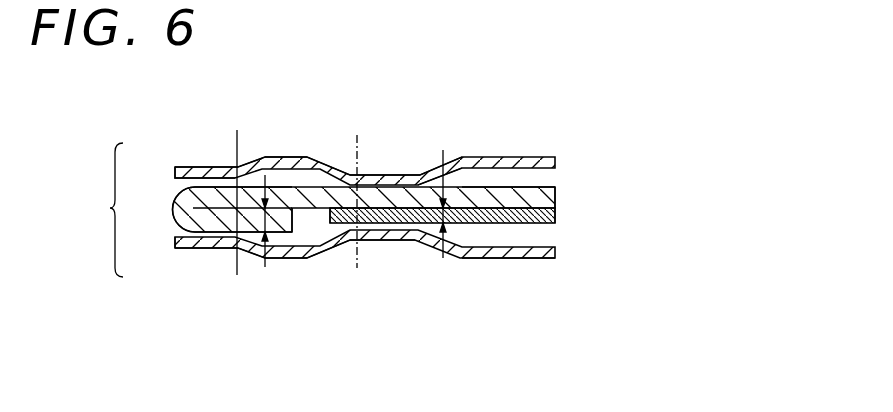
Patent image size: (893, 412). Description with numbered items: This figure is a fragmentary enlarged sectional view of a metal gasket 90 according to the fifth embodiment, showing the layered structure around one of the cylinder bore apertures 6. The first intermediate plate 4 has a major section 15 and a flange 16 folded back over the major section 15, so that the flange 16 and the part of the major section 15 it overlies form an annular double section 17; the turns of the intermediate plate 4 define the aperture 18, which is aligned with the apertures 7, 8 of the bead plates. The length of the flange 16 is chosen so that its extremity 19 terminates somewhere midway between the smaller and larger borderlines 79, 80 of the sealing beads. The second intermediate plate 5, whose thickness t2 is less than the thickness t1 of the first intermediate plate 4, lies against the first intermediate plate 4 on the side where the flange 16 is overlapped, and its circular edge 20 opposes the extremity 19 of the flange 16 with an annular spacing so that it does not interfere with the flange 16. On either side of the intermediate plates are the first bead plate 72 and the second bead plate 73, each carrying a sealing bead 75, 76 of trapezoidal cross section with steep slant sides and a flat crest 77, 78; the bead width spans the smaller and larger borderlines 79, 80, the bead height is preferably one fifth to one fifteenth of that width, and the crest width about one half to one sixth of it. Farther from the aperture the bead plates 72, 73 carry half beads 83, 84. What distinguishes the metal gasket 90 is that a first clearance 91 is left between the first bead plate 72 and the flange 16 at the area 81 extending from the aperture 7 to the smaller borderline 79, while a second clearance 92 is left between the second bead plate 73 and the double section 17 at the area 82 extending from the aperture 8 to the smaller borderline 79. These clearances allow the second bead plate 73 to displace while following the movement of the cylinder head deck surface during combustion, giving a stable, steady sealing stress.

The first intermediate plate 4 is at (543, 202).
The second intermediate plate 5 is at (556, 217).
The cylinder bore apertures 6 is at (109, 210).
The aperture 7 is at (176, 245).
The aperture 8 is at (175, 170).
The major section 15 is at (512, 197).
The flange 16 is at (226, 250).
The double section 17 is at (222, 168).
The third aperture 18 is at (171, 208).
The extremity of flange 19 is at (294, 236).
The circular edge 20 is at (330, 247).
The first bead plate 72 is at (387, 241).
The second bead plate 73 is at (387, 183).
The sealing bead 75 is at (315, 253).
The sealing bead 76 is at (312, 160).
The flat crest 77 is at (280, 258).
The flat crest 78 is at (285, 157).
The smaller borderline 79 is at (240, 280).
The larger borderline 80 is at (358, 266).
The area neighboring aperture 81 is at (197, 250).
The area neighboring aperture 82 is at (193, 168).
The half bead 83 is at (463, 253).
The half bead 84 is at (467, 163).
The metal gasket 90 is at (416, 150).
The first clearance 91 is at (188, 233).
The upper gap 92 is at (193, 182).
The thickness of first intermediate plate t1 is at (253, 262).
The thickness of second intermediate plate t2 is at (429, 248).